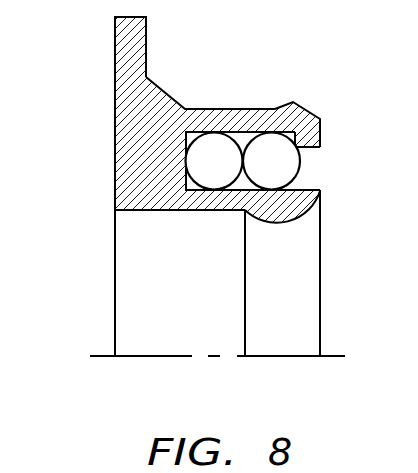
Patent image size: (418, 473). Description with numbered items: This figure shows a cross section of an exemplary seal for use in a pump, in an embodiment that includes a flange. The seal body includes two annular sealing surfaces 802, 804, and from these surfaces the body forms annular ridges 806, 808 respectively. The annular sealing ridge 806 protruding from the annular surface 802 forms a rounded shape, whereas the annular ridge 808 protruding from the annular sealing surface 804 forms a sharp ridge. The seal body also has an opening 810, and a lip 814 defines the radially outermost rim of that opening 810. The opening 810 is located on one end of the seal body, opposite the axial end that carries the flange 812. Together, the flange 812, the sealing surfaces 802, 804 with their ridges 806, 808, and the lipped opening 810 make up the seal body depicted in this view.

The annular sealing surface 802 is at (170, 211).
The annular sealing surface 804 is at (197, 108).
The annular ridge 806 is at (283, 222).
The annular ridge 808 is at (294, 103).
The opening 810 is at (315, 170).
The flange 812 is at (117, 73).
The lip 814 is at (320, 148).